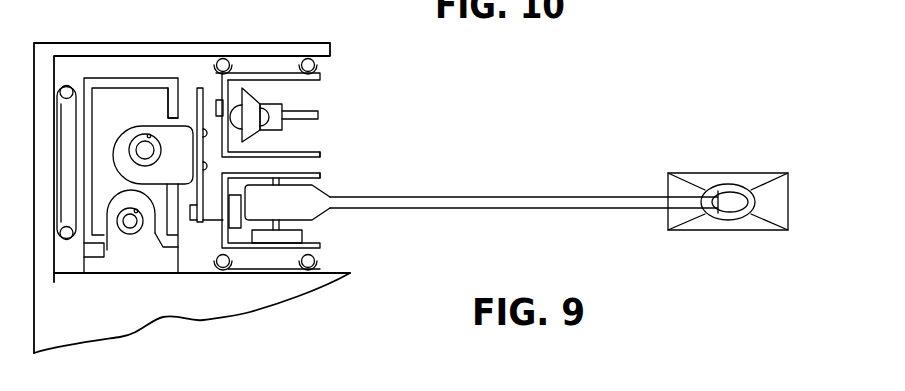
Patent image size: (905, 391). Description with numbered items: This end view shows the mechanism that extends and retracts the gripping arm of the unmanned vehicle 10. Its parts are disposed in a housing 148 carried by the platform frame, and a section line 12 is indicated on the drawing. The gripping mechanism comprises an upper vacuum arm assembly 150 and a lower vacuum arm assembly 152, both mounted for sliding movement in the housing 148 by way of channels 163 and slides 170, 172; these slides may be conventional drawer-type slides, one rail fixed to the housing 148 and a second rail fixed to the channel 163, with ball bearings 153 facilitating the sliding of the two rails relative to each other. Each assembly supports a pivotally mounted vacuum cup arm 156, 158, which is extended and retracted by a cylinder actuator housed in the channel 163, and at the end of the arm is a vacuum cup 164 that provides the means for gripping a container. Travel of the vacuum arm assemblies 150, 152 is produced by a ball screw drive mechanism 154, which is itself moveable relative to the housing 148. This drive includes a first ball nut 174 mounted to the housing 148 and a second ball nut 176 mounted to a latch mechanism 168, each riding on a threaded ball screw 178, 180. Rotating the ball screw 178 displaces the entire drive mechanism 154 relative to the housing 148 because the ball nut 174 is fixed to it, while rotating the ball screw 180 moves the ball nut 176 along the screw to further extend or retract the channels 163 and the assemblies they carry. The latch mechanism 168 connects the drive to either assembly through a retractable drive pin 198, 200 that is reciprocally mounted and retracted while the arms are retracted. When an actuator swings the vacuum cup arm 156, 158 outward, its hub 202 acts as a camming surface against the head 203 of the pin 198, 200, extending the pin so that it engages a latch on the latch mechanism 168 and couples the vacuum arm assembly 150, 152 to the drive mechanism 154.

The vehicle 10 is at (162, 0).
The section line 12- 12 is at (203, 62).
The housing 148 is at (262, 43).
The upper vacuum arm assembly 150 is at (340, 222).
The lower vacuum arm assembly 152 is at (325, 92).
The ball bearings 153 is at (230, 47).
The ball screw drive mechanism 154 is at (87, 78).
The vacuum cup arm 156 is at (320, 115).
The vacuum cup arm 158 is at (513, 195).
The channel 163 is at (318, 173).
The vacuum cup 164 is at (710, 172).
The latch mechanism 168 is at (183, 101).
The slide 170 is at (285, 264).
The slide 172 is at (284, 63).
The first ball nut 174 is at (107, 263).
The second ball nut 176 is at (137, 128).
The threaded ball screw 178 is at (131, 229).
The threaded ball screw 180 is at (137, 152).
The retractable drive pin 198 is at (204, 223).
The retractable drive pin 200 is at (217, 100).
The hub 202 is at (297, 200).
The head 203 is at (237, 200).